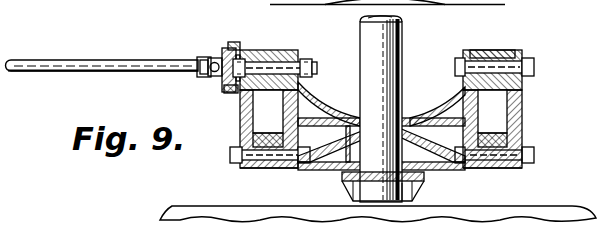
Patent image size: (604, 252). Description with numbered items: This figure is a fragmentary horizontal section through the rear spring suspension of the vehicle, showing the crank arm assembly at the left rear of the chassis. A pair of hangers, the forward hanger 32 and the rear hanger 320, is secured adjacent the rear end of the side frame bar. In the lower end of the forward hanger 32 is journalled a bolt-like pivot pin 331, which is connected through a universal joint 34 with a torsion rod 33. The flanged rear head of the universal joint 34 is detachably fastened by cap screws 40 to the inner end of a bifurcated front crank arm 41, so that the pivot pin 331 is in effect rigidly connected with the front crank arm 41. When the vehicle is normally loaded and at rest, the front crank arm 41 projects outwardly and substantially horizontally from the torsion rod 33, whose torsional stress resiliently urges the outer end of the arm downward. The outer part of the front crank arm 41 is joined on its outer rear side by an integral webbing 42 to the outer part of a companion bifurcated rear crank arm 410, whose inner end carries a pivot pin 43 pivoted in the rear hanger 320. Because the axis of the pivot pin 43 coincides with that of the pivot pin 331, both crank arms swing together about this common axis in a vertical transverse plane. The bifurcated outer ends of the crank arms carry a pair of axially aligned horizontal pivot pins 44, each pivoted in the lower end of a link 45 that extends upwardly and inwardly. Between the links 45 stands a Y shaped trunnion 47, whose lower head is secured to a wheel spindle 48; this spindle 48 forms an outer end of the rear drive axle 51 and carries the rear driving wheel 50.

The torsion rod 33 is at (35, 60).
The universal joint 34 is at (198, 62).
The cap screws 40 is at (230, 45).
The front crank arm 41 is at (240, 103).
The forward hanger 32 is at (262, 59).
The pivot pin 331 is at (316, 70).
The pivot pins 44 is at (232, 156).
The link 45 is at (272, 168).
The integral webbing 42 is at (345, 112).
The rear axle 51 is at (360, 30).
The rear crank arm 410 is at (522, 107).
The rear hanger 320 is at (490, 50).
The pivot pin 43 is at (534, 66).
The Y shaped trunnion 47 is at (345, 178).
The wheel spindle 48 is at (413, 200).
The rear driving wheel 50 is at (172, 206).